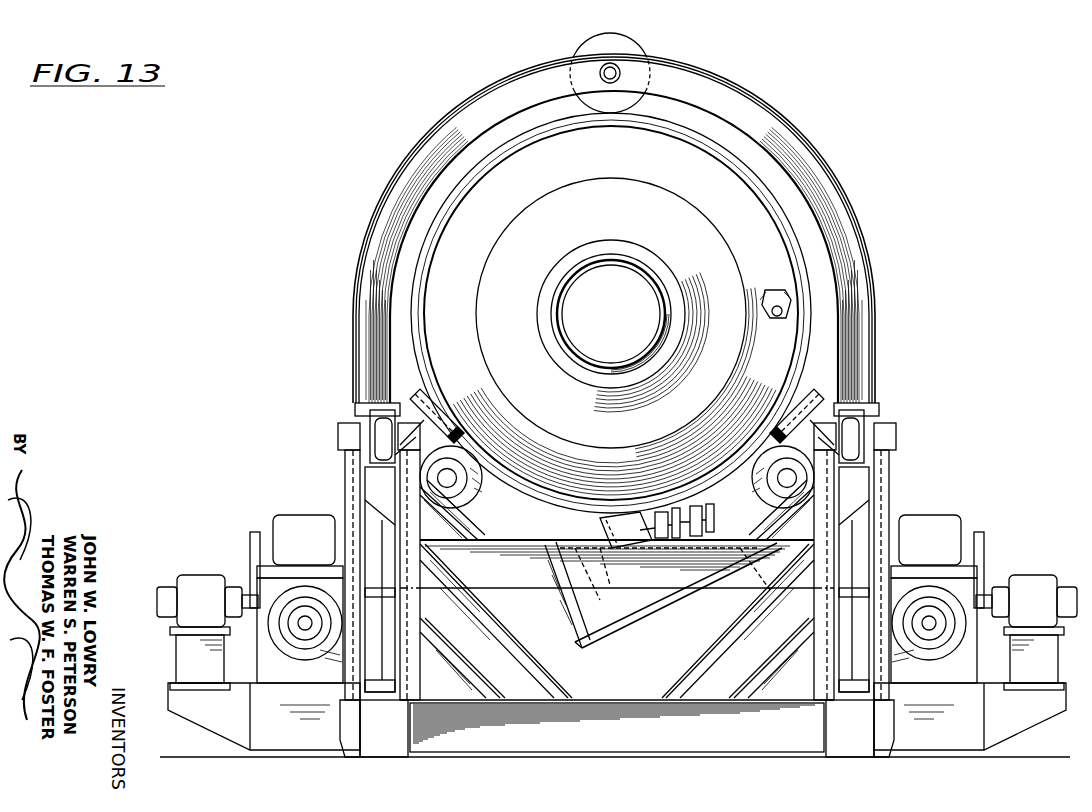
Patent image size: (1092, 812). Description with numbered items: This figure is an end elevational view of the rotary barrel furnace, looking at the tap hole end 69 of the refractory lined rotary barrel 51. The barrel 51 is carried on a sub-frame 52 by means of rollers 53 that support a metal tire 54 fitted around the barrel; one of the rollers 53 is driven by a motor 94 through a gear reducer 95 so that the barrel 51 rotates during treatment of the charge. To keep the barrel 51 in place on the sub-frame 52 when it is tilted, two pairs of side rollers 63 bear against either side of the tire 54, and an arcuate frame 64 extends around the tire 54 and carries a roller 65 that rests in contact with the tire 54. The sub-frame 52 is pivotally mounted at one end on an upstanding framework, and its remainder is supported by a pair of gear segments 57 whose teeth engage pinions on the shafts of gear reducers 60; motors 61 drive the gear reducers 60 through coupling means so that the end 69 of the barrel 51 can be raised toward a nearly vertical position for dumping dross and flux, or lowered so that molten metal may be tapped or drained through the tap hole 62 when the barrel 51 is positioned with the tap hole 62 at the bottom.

The rotary barrel 51 is at (724, 176).
The sub-frame 52 is at (507, 575).
The rollers 53 is at (482, 492).
The metal tire 54 is at (684, 137).
The gear segments 57 is at (383, 690).
The gear reducers 60 is at (305, 520).
The motors 61 is at (203, 580).
The tap hole 62 is at (779, 290).
The side rollers 63 is at (428, 399).
The arcuate frame 64 is at (493, 85).
The roller 65 is at (596, 52).
The tap hole end of barrel 69 is at (516, 194).
The motor 94 is at (604, 533).
The gear reducer 95 is at (745, 528).